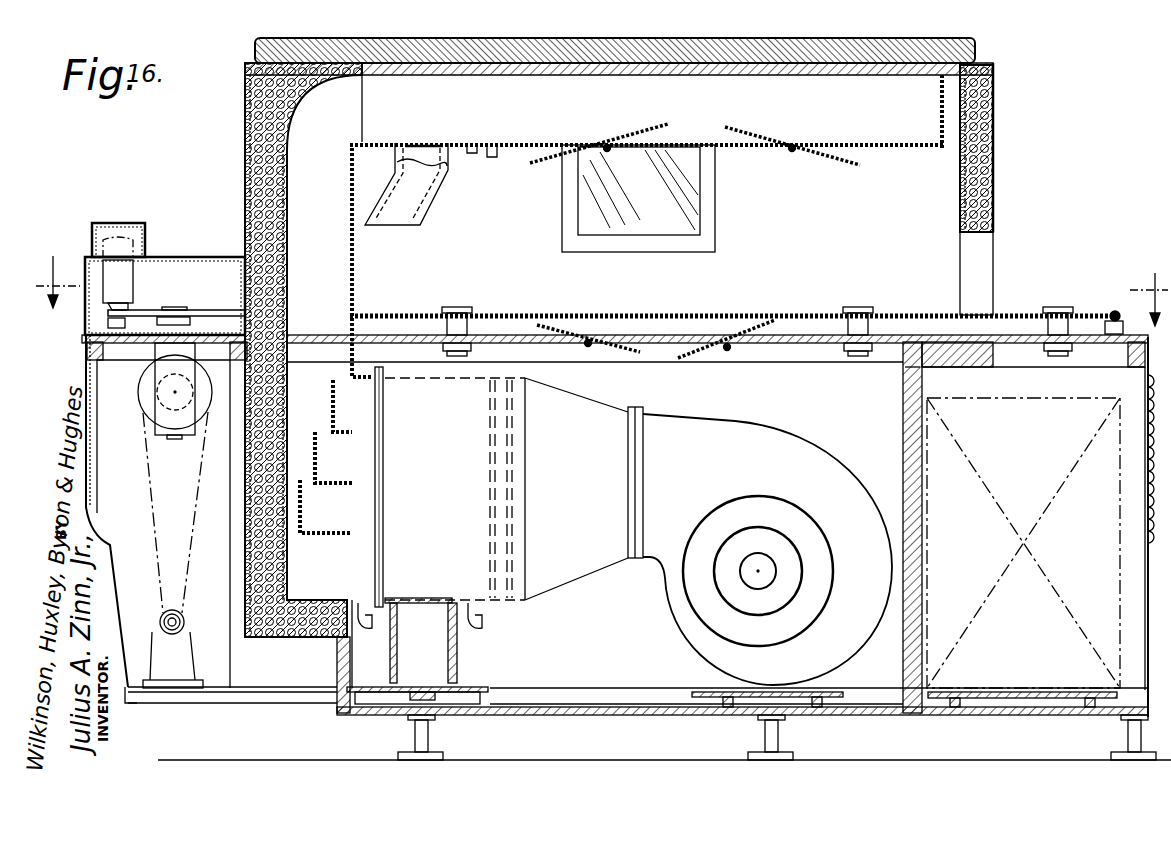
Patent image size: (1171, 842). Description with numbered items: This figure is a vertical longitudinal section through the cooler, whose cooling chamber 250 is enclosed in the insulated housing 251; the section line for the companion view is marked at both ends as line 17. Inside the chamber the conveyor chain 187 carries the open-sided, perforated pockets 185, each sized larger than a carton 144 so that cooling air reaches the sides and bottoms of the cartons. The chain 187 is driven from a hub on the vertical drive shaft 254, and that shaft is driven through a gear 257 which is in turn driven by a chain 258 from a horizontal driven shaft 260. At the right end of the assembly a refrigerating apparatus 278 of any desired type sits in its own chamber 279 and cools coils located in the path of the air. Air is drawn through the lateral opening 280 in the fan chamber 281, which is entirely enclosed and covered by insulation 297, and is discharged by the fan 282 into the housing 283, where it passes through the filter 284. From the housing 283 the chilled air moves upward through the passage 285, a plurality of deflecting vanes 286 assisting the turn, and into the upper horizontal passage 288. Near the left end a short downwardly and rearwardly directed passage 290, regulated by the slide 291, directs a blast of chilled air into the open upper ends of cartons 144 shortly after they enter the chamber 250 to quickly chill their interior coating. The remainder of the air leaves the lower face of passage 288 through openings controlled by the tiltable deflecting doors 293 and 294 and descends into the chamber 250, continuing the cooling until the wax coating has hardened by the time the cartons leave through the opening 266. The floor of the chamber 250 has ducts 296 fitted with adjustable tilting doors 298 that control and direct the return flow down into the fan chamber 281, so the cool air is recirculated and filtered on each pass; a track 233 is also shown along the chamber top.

The upper horizontal passage 288 is at (517, 85).
The filter 284 is at (300, 398).
The cooling chamber 250 is at (930, 202).
The insulated housing 251 is at (995, 104).
The opening 266 is at (983, 247).
The upwardly extending passage 285 is at (354, 272).
The track rail 233 is at (1060, 311).
The tiltable deflecting door 293 is at (607, 145).
The tiltable deflecting door 294 is at (793, 146).
The downwardly and rearwardly directed passage 290 is at (415, 212).
The slide 291 is at (487, 158).
The ducts 296 is at (557, 330).
The tilting doors 298 is at (692, 347).
The deflecting vanes 286 is at (306, 533).
The housing 283 is at (462, 438).
The fan 282 is at (763, 442).
The lateral opening 280 is at (760, 507).
The refrigerating apparatus 278 is at (982, 678).
The chamber 279 is at (1005, 383).
The section line 17- 17 is at (602, 279).
The carton 144 is at (128, 238).
The open-sided pockets 185 is at (135, 281).
The conveyor chain 187 is at (147, 312).
The vertical drive shaft 254 is at (183, 306).
The gear 257 is at (160, 402).
The chain 258 is at (200, 498).
The horizontal driven shaft 260 is at (185, 618).
The insulation 297 is at (510, 716).
The fan chamber 281 is at (642, 675).